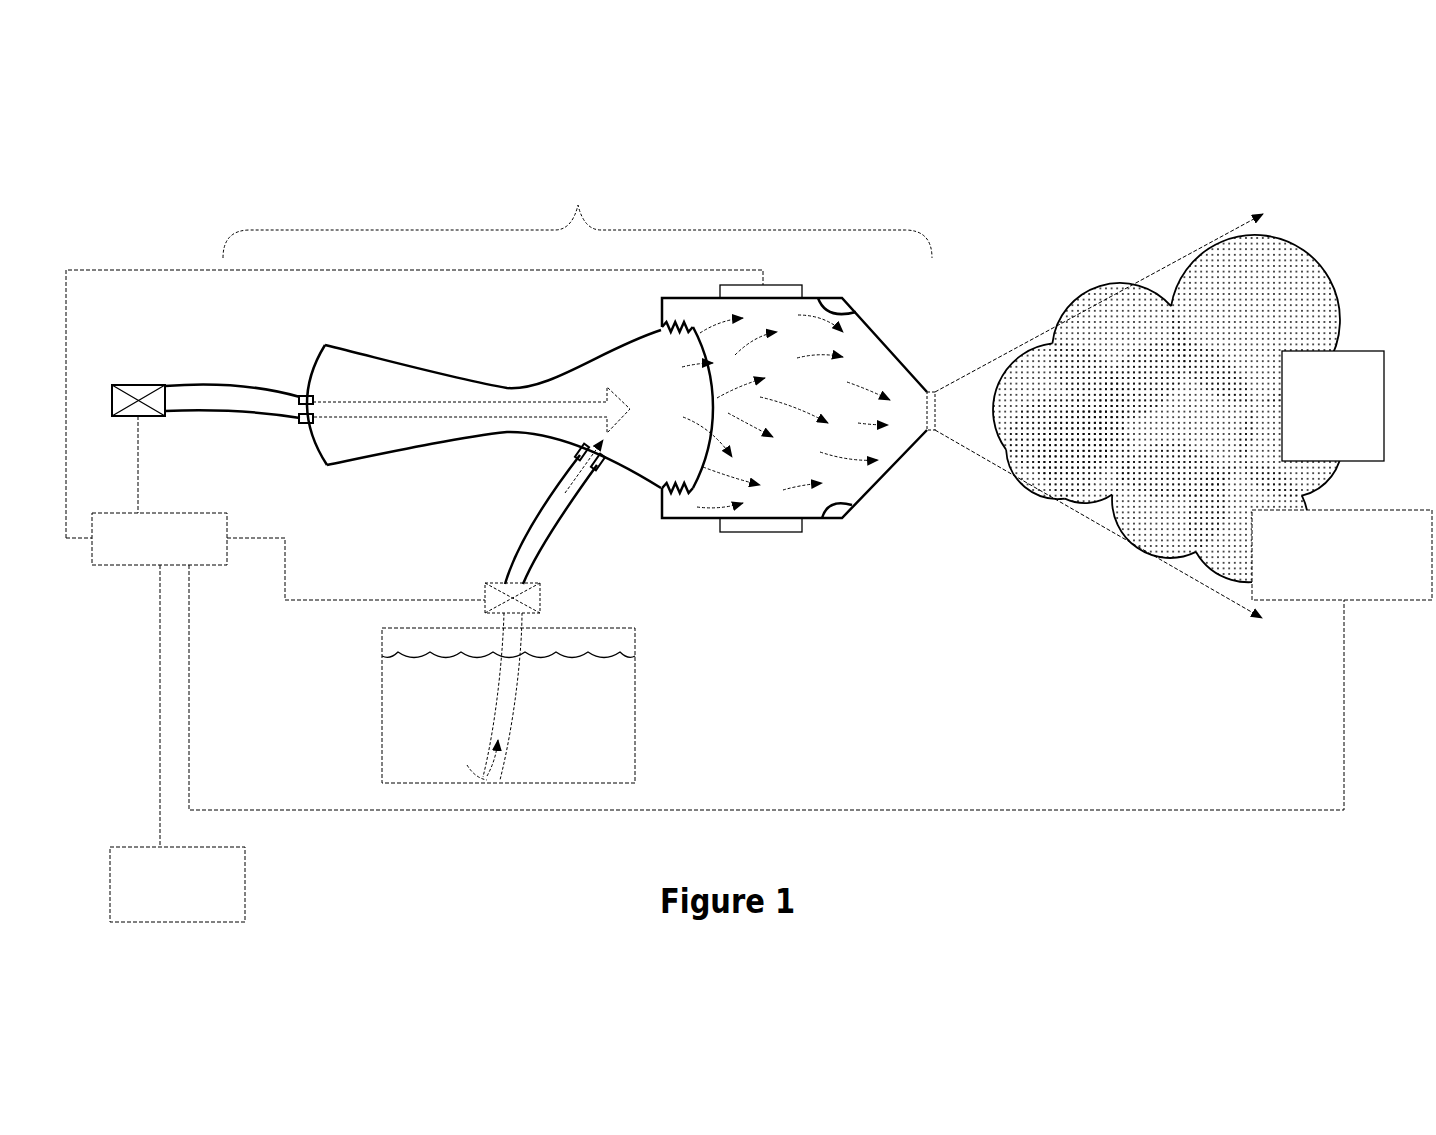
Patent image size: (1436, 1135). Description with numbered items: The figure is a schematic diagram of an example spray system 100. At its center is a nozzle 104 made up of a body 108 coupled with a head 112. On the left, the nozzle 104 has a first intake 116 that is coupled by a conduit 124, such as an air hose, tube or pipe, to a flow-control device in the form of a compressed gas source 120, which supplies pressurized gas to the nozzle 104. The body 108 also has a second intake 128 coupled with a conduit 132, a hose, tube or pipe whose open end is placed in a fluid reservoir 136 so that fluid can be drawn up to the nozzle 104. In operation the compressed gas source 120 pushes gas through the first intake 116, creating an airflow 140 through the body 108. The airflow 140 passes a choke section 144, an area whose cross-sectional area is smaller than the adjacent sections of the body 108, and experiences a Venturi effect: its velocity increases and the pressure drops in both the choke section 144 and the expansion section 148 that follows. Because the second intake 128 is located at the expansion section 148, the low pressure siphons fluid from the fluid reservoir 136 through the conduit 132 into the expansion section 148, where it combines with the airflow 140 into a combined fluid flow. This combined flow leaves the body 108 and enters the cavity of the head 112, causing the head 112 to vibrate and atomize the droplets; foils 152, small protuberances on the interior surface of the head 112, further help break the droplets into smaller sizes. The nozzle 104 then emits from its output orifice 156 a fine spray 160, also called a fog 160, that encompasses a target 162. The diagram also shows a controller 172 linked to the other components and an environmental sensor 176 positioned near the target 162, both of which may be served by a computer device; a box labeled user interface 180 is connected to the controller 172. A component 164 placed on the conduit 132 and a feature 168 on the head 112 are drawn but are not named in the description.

The spray system 100 is at (308, 150).
The nozzle 104 is at (577, 212).
The body 108 is at (343, 358).
The head 112 is at (660, 320).
The first intake 116 is at (306, 398).
The compressed gas source 120 is at (150, 385).
The conduit 124 is at (225, 412).
The second intake 128 is at (558, 452).
The conduit 132 is at (508, 560).
The fluid reservoir 136 is at (382, 697).
The airflow 140 is at (358, 390).
The choke section 144 is at (507, 370).
The expansion section 148 is at (595, 352).
The foils 152 is at (845, 304).
The output orifice 156 is at (936, 398).
The fine spray 160 is at (1302, 264).
The target 162 is at (1333, 406).
The liquid valve 164 is at (485, 598).
The mounting tabs 168 is at (780, 532).
The controller 172 is at (210, 513).
The environmental sensor 176 is at (1342, 555).
The user interface 180 is at (246, 880).